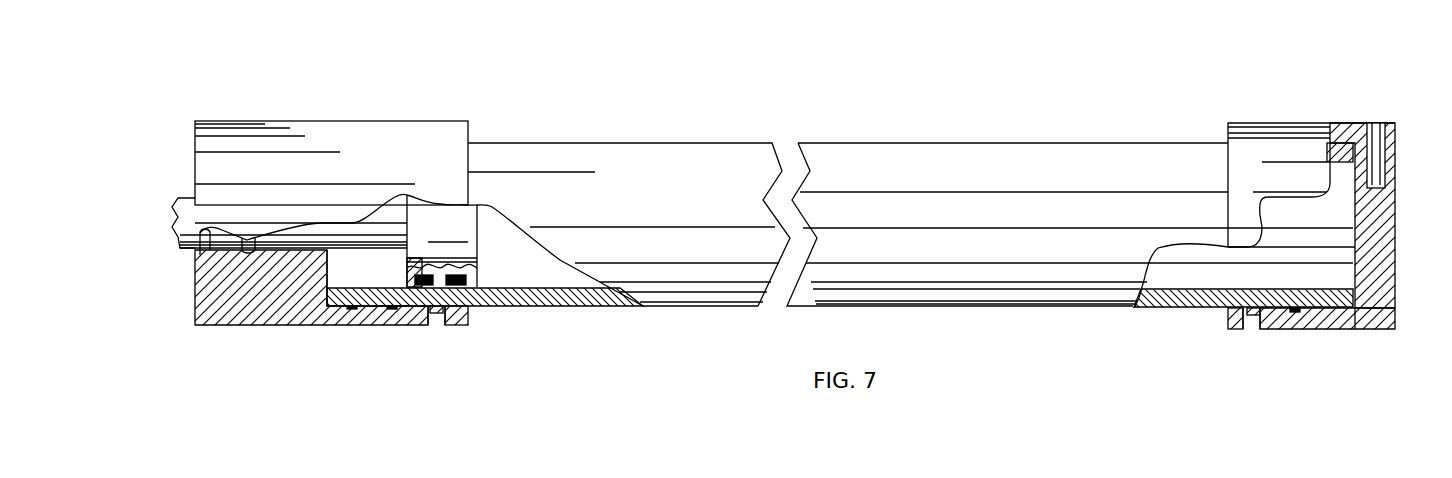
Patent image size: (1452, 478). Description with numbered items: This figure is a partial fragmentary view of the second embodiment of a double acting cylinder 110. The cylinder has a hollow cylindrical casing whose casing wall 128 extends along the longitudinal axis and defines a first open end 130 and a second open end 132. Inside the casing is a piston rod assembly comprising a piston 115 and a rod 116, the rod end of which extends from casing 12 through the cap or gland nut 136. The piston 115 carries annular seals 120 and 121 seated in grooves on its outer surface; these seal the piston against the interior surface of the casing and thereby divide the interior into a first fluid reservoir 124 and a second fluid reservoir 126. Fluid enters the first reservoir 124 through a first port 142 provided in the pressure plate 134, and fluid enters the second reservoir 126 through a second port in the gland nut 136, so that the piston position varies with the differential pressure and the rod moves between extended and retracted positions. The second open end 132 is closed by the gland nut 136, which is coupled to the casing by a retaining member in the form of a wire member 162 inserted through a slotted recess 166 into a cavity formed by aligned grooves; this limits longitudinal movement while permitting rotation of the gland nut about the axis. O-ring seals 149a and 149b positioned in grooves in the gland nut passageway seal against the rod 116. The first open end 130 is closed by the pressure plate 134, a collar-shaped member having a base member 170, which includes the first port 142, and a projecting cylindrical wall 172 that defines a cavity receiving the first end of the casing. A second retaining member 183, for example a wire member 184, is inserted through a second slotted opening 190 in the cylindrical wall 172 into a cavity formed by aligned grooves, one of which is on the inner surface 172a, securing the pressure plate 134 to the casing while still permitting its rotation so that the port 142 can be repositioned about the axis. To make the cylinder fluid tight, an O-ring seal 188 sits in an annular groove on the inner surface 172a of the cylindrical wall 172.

The casing 12 is at (600, 306).
The double acting cylinder 110 is at (1062, 123).
The piston 115 is at (468, 233).
The rod 116 is at (180, 197).
The annular seal 120 is at (418, 281).
The annular seal 121 is at (477, 283).
The first fluid reservoir 124 is at (527, 288).
The second fluid reservoir 126 is at (328, 303).
The casing wall 128 is at (572, 306).
The first open end 130 is at (1340, 302).
The second open end 132 is at (323, 300).
The pressure plate 134 is at (1273, 125).
The gland nut 136 is at (405, 120).
The first port 142 is at (1377, 120).
The O-ring seal 149a is at (203, 240).
The O-ring seal 149b is at (240, 252).
The wire member 162 is at (432, 313).
The slotted recess 166 is at (437, 325).
The base member 170 is at (1380, 212).
The cylindrical wall 172 is at (1220, 310).
The inner surface of cylindrical wall 172a is at (1350, 310).
The second retaining member 183 is at (1243, 317).
The wire member 184 is at (1252, 315).
The O-ring seal 188 is at (1295, 312).
The second slotted opening 190 is at (1256, 335).